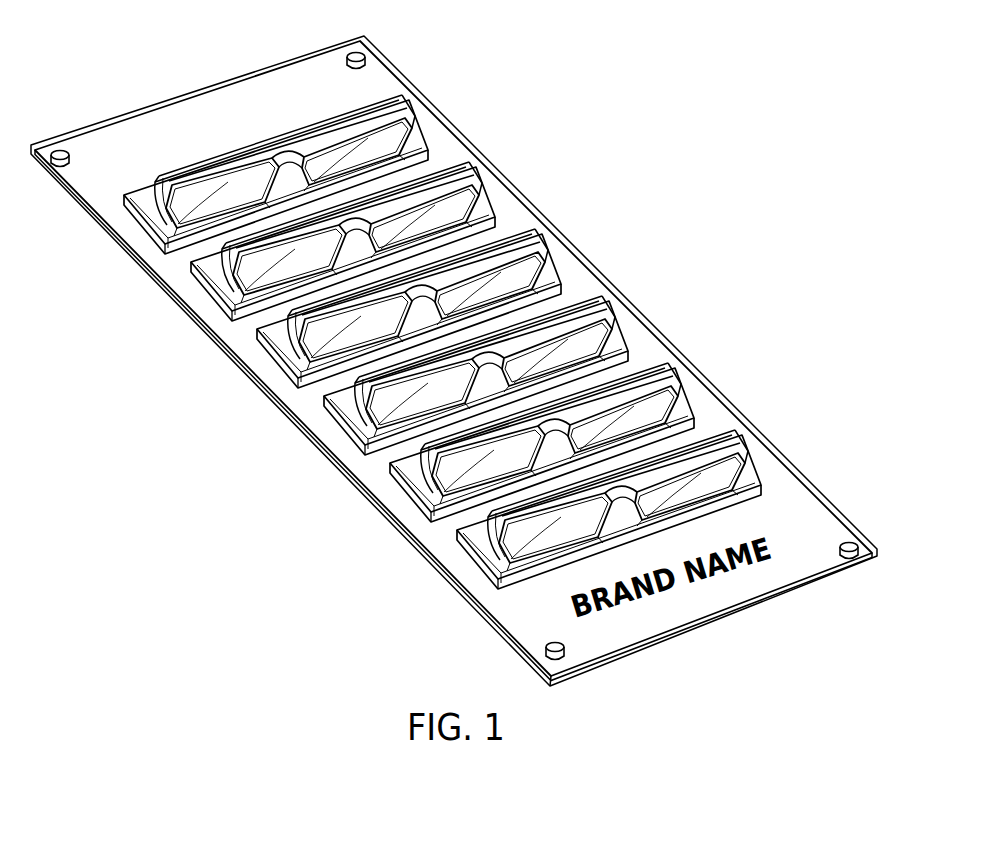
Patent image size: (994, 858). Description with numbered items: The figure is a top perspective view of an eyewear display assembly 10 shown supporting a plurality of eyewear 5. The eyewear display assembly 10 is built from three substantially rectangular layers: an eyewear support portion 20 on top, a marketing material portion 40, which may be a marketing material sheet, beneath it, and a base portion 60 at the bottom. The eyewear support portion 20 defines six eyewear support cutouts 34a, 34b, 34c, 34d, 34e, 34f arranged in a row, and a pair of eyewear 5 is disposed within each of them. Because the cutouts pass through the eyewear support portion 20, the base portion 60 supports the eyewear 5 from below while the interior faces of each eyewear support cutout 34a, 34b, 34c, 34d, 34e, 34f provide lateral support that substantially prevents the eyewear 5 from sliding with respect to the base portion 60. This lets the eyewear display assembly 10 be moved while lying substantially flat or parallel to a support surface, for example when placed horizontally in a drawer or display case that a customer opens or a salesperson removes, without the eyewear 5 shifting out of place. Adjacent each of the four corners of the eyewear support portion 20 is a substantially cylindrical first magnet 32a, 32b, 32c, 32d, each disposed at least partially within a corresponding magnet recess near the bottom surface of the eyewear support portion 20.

The eyewear 5 is at (743, 445).
The eyewear display assembly 10 is at (666, 100).
The eyewear support portion 20 is at (832, 536).
The first magnet 32a is at (555, 653).
The first magnet 32b is at (848, 553).
The first magnet 32c is at (58, 155).
The first magnet 32d is at (353, 55).
The eyewear support cutout 34a is at (755, 468).
The eyewear support cutout 34b is at (688, 401).
The eyewear support cutout 34c is at (622, 334).
The eyewear support cutout 34d is at (555, 267).
The eyewear support cutout 34e is at (489, 200).
The eyewear support cutout 34f is at (422, 133).
The marketing material portion 40 is at (875, 556).
The base portion 60 is at (863, 568).